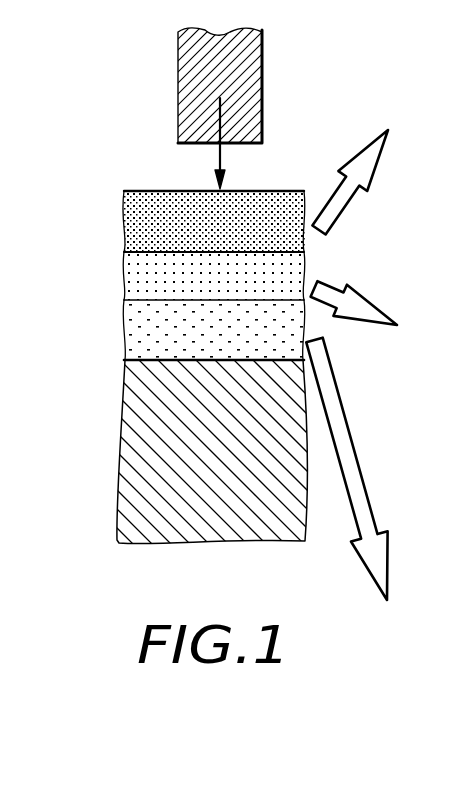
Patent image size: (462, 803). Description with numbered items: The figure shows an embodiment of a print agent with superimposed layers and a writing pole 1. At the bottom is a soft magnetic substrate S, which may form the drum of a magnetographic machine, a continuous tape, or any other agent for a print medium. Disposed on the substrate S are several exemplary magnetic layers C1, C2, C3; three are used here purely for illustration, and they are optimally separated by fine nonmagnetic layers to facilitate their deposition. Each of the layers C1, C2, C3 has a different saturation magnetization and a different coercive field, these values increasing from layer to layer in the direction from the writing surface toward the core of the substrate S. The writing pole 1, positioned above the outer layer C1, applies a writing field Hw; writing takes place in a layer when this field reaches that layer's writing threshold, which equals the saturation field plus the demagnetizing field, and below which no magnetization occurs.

The writing pole 1 is at (247, 85).
The writing threshold field Hw is at (195, 143).
The first magnetic layer C1 is at (191, 221).
The second magnetic layer C2 is at (191, 276).
The third magnetic layer C3 is at (191, 330).
The soft magnetic substrate S is at (231, 450).